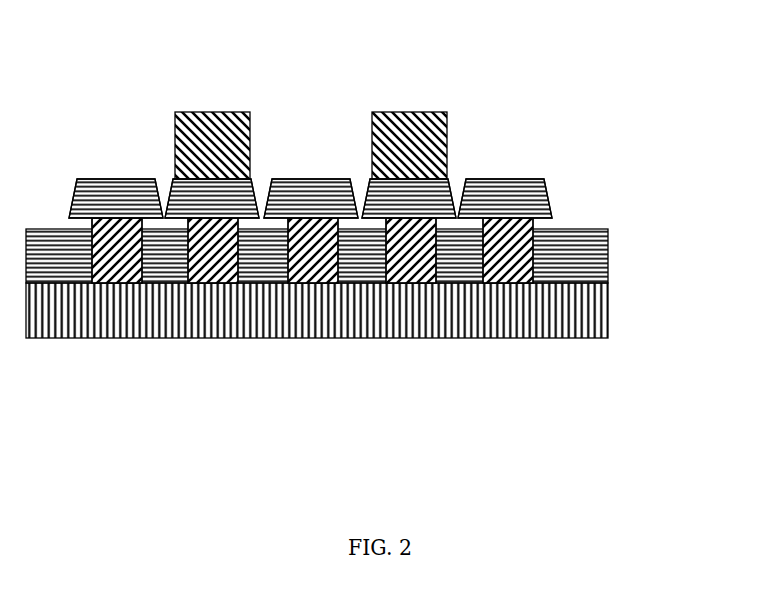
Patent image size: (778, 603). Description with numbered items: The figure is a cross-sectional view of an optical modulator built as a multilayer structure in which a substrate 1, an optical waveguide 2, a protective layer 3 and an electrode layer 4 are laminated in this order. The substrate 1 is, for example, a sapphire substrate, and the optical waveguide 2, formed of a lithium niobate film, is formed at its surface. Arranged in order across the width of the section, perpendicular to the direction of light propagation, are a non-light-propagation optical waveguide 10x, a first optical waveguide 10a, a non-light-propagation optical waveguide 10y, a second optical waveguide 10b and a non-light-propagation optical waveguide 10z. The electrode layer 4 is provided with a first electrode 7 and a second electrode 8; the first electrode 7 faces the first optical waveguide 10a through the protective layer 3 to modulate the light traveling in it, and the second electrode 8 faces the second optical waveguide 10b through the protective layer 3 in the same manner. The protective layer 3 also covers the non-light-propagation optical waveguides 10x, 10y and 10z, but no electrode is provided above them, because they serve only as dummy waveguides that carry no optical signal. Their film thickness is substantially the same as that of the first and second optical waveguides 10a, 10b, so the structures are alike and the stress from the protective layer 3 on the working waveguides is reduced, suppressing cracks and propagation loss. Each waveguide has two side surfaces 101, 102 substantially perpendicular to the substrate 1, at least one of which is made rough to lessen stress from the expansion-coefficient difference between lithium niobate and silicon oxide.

The substrate 1 is at (608, 308).
The optical waveguide 2 is at (608, 248).
The protective layer 3 is at (343, 179).
The electrode layer 4 is at (404, 91).
The first electrode 7 is at (215, 135).
The second electrode 8 is at (413, 133).
The side surface 101 is at (74, 196).
The side surface 102 is at (263, 220).
The non-light-propagation optical waveguide 10x is at (106, 235).
The first optical waveguide 10a is at (200, 235).
The non-light-propagation optical waveguide 10y is at (305, 235).
The second optical waveguide 10b is at (408, 235).
The non-light-propagation optical waveguide 10z is at (505, 235).